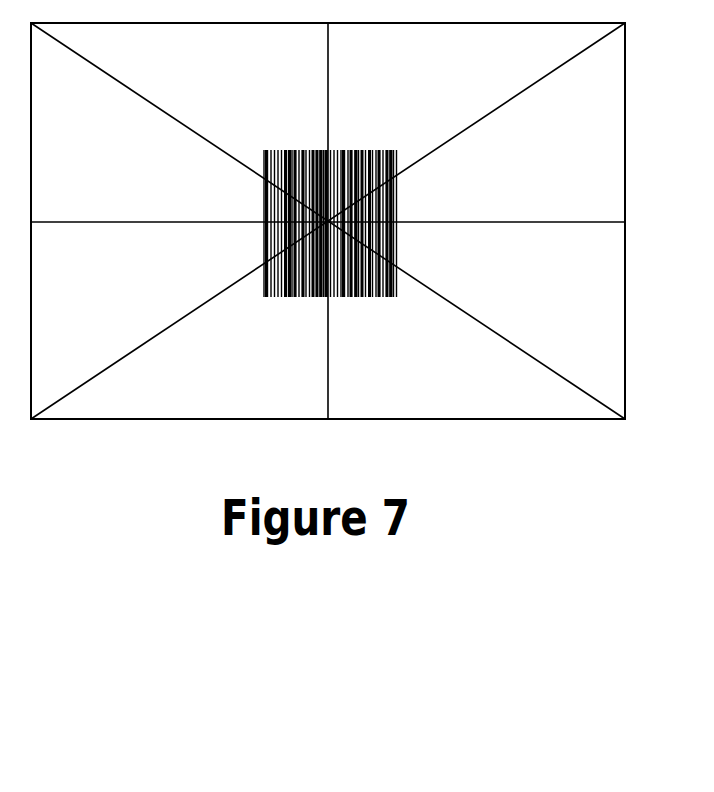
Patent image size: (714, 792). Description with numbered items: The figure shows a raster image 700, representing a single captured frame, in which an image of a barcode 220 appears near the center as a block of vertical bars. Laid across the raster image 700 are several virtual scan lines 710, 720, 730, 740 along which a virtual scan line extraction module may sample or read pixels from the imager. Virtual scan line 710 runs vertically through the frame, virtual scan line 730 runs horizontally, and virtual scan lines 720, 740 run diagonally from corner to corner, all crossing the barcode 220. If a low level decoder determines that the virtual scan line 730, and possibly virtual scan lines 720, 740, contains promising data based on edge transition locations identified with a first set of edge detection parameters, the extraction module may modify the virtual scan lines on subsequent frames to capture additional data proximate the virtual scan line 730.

The raster image 700 is at (305, 88).
The virtual scan line 710 is at (329, 367).
The virtual scan line 720 is at (513, 345).
The virtual scan line 730 is at (478, 217).
The virtual scan line 740 is at (583, 51).
The barcode 220 is at (350, 152).